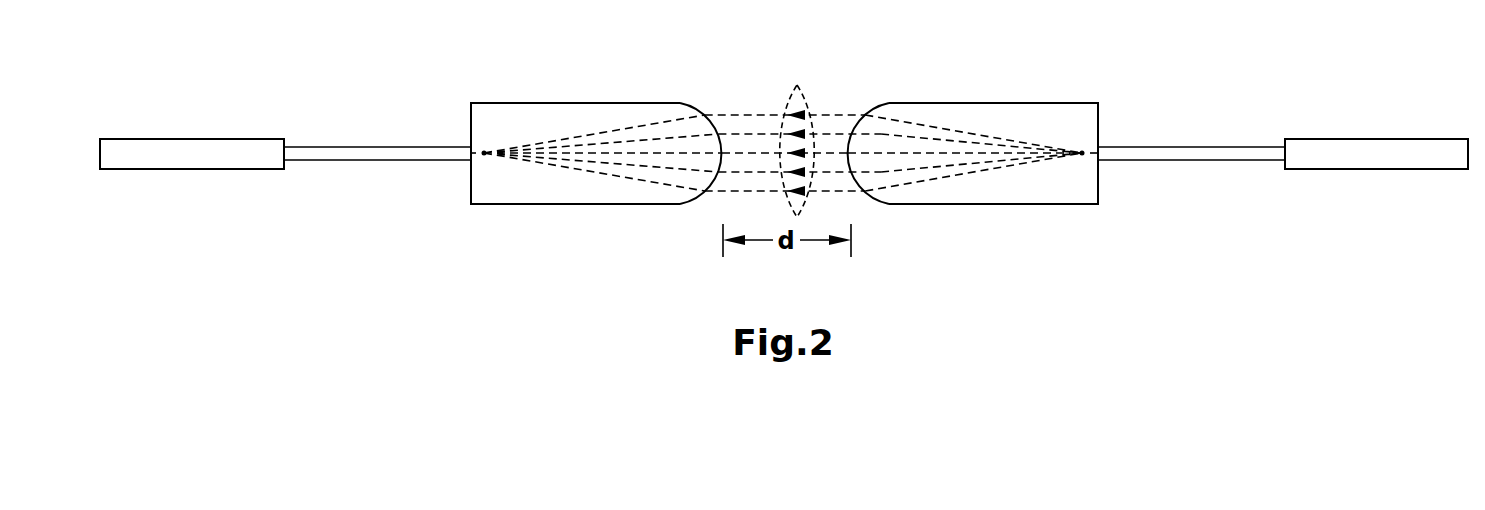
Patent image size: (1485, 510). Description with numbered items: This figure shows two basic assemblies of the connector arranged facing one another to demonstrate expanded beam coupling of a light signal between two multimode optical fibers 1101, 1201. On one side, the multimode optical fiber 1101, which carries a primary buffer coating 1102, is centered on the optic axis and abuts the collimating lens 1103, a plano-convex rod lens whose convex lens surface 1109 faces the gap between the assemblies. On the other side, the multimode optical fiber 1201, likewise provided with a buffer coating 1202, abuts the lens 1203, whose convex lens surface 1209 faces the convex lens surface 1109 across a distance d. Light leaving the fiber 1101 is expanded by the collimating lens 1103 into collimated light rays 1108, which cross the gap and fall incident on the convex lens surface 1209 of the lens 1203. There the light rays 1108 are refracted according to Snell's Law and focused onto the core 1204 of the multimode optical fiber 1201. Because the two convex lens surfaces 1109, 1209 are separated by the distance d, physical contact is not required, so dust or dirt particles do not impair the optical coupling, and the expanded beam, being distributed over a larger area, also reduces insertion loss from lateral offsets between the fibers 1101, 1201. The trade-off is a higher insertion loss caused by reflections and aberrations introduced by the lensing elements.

The multimode optical fiber 1101 is at (1193, 146).
The primary buffer coating 1102 is at (1375, 138).
The collimating lens 1103 is at (1003, 110).
The collimated light rays 1108 is at (795, 83).
The convex lens surface 1109 is at (866, 115).
The multimode optical fiber 1201 is at (340, 153).
The optical device / ferrule 1202 is at (203, 147).
The lens 1203 is at (598, 110).
The core 1204 is at (472, 150).
The convex lens surface 1209 is at (702, 116).